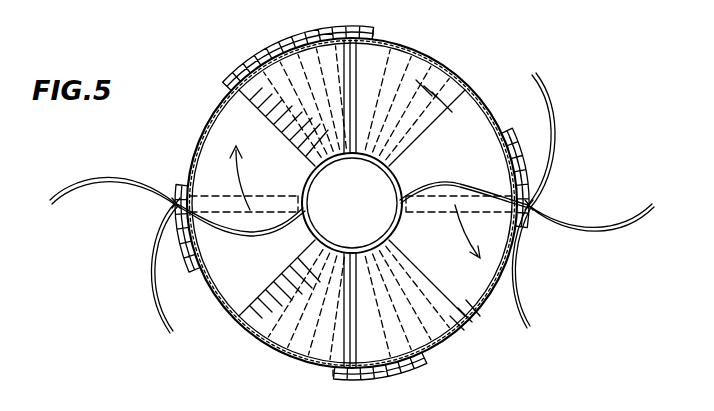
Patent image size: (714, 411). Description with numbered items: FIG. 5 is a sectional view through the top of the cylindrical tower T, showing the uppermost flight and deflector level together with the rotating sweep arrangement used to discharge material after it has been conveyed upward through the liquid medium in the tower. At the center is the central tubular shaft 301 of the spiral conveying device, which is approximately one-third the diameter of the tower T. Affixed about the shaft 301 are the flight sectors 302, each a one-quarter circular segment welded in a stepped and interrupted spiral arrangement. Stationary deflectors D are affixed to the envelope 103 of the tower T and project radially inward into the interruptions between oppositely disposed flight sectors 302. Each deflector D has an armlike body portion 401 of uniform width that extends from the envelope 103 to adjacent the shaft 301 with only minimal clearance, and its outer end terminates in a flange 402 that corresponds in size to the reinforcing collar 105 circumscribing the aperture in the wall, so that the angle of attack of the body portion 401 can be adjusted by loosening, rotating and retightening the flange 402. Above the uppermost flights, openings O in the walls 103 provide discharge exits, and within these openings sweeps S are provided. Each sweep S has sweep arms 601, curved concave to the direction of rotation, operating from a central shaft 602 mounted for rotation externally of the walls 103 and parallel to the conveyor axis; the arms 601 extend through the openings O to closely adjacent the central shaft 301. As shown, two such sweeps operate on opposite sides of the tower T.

The envelope 103 is at (440, 60).
The reinforcing collar 105 is at (386, 40).
The central tubular shaft 301 is at (380, 172).
The flight sector 302 is at (236, 290).
The body portion 401 is at (362, 116).
The flange 402 is at (372, 28).
The sweep arm 601 is at (112, 176).
The central shaft 602 is at (178, 198).
The deflector D is at (386, 72).
The discharge opening O is at (220, 100).
The sweep S is at (144, 211).
The tower T is at (462, 84).